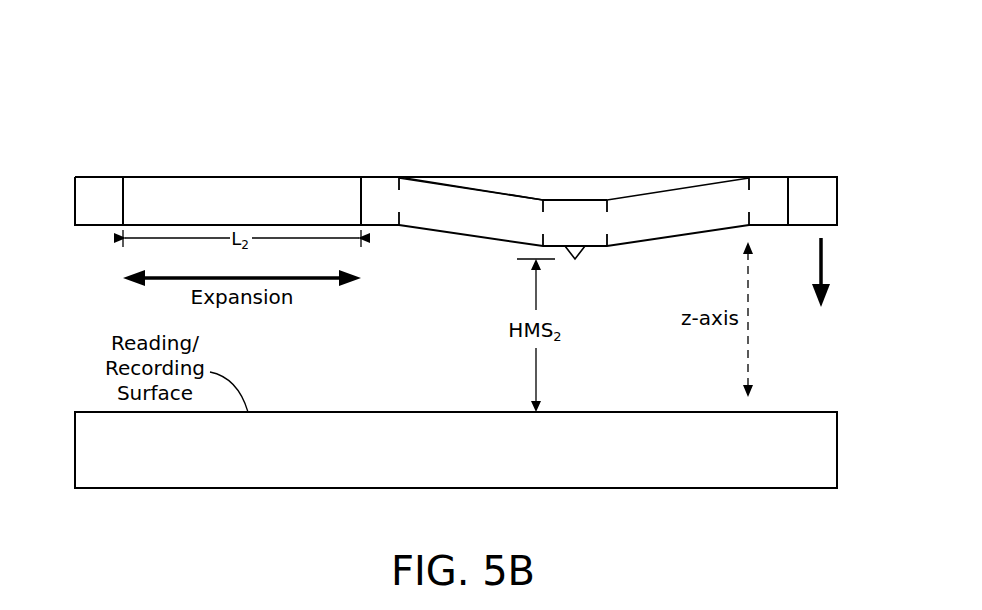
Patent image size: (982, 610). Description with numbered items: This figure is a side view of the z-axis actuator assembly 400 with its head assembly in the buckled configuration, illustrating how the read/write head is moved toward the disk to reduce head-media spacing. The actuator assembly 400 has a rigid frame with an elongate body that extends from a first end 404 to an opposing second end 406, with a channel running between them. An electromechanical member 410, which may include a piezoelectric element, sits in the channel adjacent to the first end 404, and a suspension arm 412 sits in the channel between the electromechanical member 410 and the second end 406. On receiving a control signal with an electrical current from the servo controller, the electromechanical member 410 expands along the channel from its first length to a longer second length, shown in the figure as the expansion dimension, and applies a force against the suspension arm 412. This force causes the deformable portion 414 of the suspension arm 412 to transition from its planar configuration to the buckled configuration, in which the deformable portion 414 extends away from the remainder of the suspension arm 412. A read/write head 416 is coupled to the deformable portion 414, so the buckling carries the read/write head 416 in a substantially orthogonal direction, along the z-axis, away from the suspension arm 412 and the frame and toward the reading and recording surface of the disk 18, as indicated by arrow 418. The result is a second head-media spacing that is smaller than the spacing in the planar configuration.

The z-axis actuator assembly 400 is at (187, 94).
The first end 404 is at (98, 192).
The second end 406 is at (817, 200).
The electromechanical member 410 is at (197, 192).
The suspension arm 412 is at (552, 190).
The deformable portion 414 is at (577, 210).
The read/write head 416 is at (582, 249).
The arrow 418 is at (842, 272).
The disk 18 is at (456, 450).